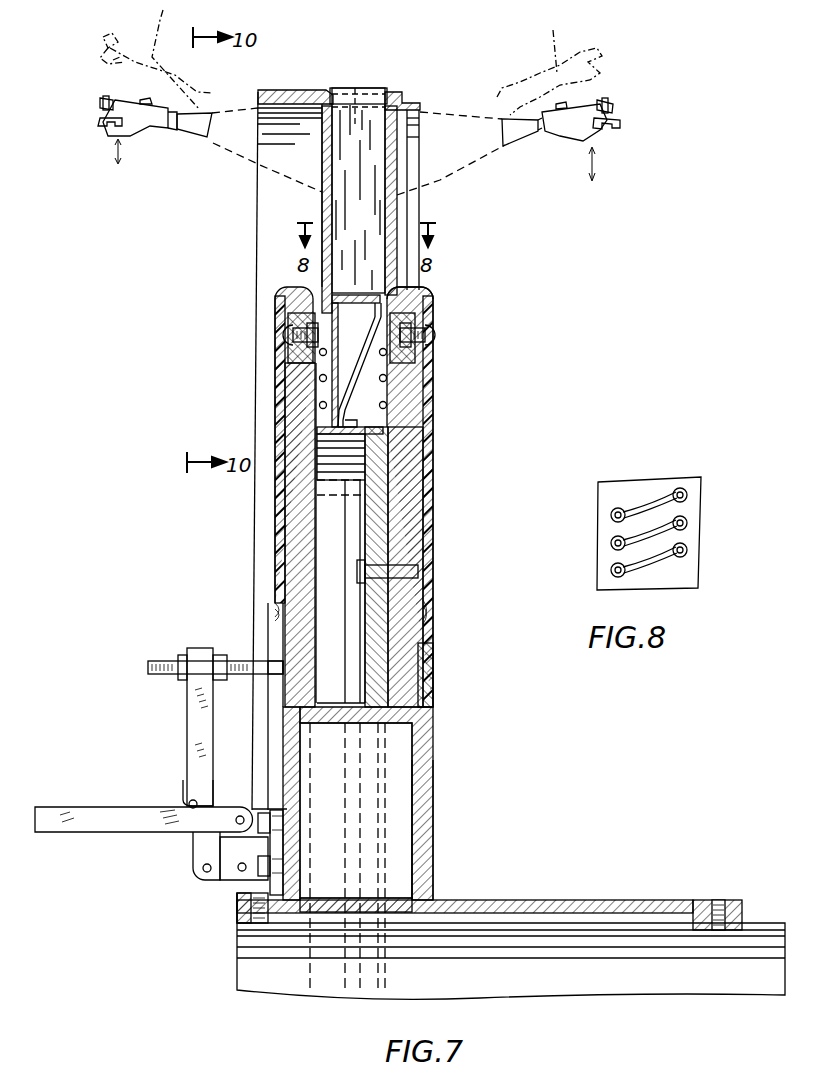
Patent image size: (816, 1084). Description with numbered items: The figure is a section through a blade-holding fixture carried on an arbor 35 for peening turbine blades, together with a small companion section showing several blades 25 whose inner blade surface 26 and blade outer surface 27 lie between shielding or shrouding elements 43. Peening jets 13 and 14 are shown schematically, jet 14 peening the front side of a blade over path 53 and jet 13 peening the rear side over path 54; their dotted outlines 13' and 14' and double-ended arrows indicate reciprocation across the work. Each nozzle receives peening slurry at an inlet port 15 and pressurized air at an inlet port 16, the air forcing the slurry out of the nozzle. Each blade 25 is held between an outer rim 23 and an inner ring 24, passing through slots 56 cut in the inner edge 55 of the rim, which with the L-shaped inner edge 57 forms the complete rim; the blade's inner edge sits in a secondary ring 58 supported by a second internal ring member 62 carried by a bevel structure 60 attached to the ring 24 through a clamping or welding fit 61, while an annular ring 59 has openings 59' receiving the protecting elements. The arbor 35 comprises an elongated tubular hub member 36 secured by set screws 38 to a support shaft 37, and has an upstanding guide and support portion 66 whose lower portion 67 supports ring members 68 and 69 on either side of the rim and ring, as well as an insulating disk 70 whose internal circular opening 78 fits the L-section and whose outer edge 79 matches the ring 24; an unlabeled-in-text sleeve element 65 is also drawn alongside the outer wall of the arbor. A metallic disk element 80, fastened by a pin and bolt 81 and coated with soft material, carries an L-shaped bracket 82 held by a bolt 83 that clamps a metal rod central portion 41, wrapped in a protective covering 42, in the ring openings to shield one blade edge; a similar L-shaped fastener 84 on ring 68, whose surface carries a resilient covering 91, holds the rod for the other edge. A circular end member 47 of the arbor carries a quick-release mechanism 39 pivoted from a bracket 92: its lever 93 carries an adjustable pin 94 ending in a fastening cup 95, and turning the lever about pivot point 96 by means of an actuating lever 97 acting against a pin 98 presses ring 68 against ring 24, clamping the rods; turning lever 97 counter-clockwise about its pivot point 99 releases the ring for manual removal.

In FIG. 7, the peening jet 13 is at (554, 141).
In FIG. 7, the peening jet in dotted outline 13' is at (549, 72).
In FIG. 7, the peening jet 14 is at (151, 120).
In FIG. 7, the peening jet in dotted outline 14' is at (156, 59).
In FIG. 7, the inlet port 15 is at (100, 103).
In FIG. 7, the inlet port 16 is at (100, 126).
In FIG. 7, the outer rim 23 is at (398, 93).
In FIG. 7, the inner ring 24 is at (318, 440).
In FIG. 7, the blade 25 is at (370, 228).
In FIG. 8, the inner blade surface 26 is at (645, 530).
In FIG. 8, the blade outer surface 27 is at (652, 500).
In FIG. 7, the arbor 35 is at (433, 856).
In FIG. 7, the elongated tubular hub member 36 is at (605, 900).
In FIG. 7, the support shaft 37 is at (240, 972).
In FIG. 7, the set screws 38 is at (720, 900).
In FIG. 7, the quick-release mechanism 39 is at (190, 742).
In FIG. 7, the metal rod central portion 41 is at (290, 300).
In FIG. 7, the protective covering 42 is at (392, 162).
In FIG. 7, the shielding or shrouding elements 43 is at (325, 195).
In FIG. 8, the shielding or shrouding elements 43 is at (687, 492).
In FIG. 7, the circular end member 47 is at (292, 760).
In FIG. 7, the path 53 is at (232, 160).
In FIG. 7, the path 54 is at (470, 168).
In FIG. 7, the inner edge of the rim 55 is at (290, 92).
In FIG. 7, the slots 56 is at (360, 102).
In FIG. 7, the inner edge 57 is at (410, 106).
In FIG. 7, the secondary ring 58 is at (352, 295).
In FIG. 7, the annular ring 59 is at (343, 314).
In FIG. 7, the openings 59' is at (345, 382).
In FIG. 7, the bevel structure 60 is at (370, 402).
In FIG. 7, the clamping or welding fit 61 is at (432, 307).
In FIG. 7, the second internal ring member 62 is at (362, 303).
In FIG. 7, the sleeve 65 is at (387, 623).
In FIG. 7, the upstanding guide and support portion 66 is at (433, 722).
In FIG. 7, the lower portion of the L-shaped member 67 is at (334, 716).
In FIG. 7, the ring member 68 is at (300, 500).
In FIG. 7, the ring member 69 is at (410, 474).
In FIG. 7, the insulating disk 70 is at (410, 518).
In FIG. 7, the internal circular opening 78 is at (378, 716).
In FIG. 7, the outer edge 79 is at (375, 436).
In FIG. 7, the metallic disk element 80 is at (402, 603).
In FIG. 7, the pin and bolt 81 is at (287, 336).
In FIG. 7, the L-shaped bracket 82 is at (428, 331).
In FIG. 7, the bolt 83 is at (412, 346).
In FIG. 7, the L-shaped fastener 84 is at (300, 356).
In FIG. 7, the resilient covering 91 is at (280, 540).
In FIG. 7, the bracket 92 is at (228, 882).
In FIG. 7, the lever 93 is at (190, 691).
In FIG. 7, the adjustable pin 94 is at (262, 662).
In FIG. 7, the fastening cup 95 is at (280, 661).
In FIG. 7, the pivot point 96 is at (203, 868).
In FIG. 7, the actuating lever 97 is at (78, 812).
In FIG. 7, the pin 98 is at (190, 803).
In FIG. 7, the pivot point 99 is at (240, 812).